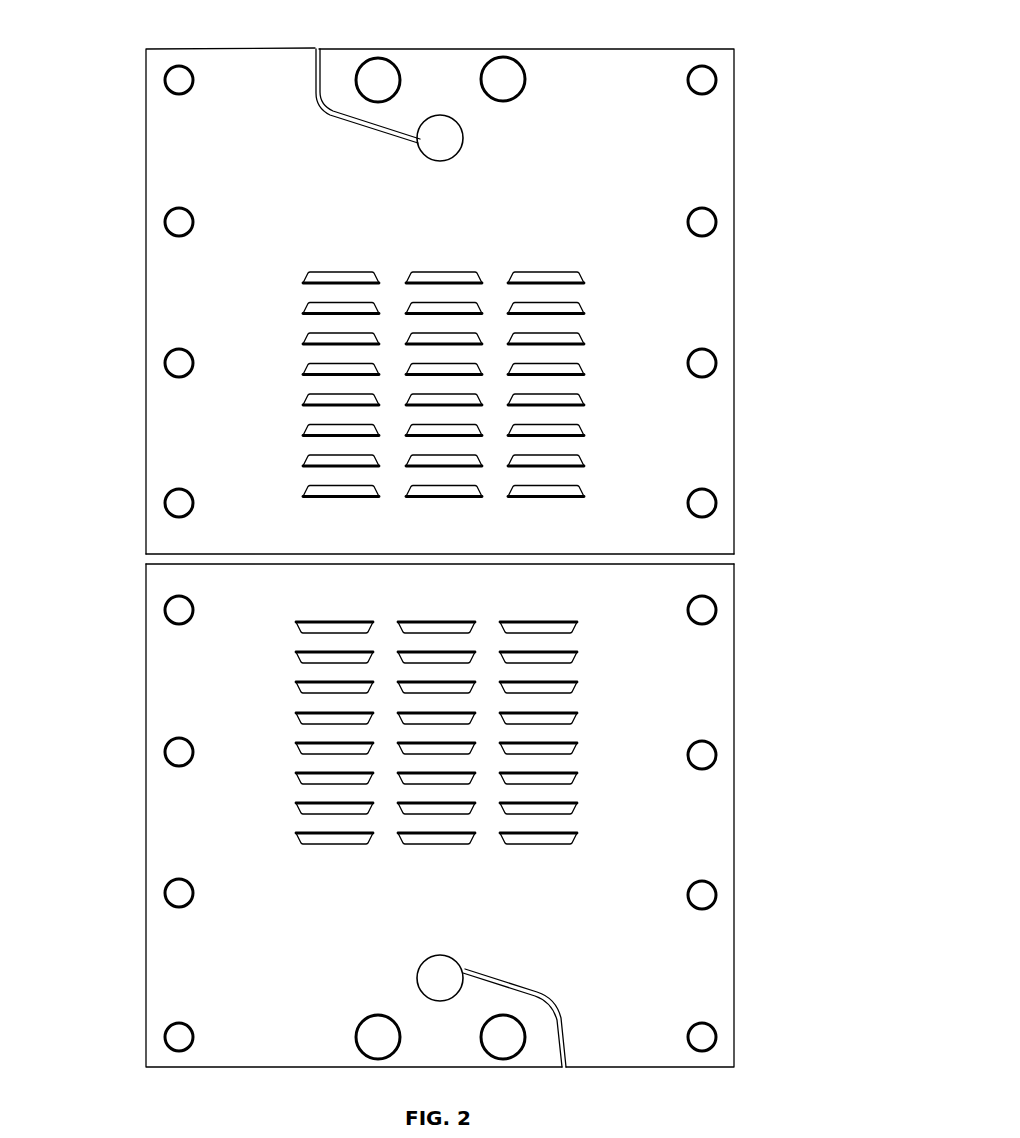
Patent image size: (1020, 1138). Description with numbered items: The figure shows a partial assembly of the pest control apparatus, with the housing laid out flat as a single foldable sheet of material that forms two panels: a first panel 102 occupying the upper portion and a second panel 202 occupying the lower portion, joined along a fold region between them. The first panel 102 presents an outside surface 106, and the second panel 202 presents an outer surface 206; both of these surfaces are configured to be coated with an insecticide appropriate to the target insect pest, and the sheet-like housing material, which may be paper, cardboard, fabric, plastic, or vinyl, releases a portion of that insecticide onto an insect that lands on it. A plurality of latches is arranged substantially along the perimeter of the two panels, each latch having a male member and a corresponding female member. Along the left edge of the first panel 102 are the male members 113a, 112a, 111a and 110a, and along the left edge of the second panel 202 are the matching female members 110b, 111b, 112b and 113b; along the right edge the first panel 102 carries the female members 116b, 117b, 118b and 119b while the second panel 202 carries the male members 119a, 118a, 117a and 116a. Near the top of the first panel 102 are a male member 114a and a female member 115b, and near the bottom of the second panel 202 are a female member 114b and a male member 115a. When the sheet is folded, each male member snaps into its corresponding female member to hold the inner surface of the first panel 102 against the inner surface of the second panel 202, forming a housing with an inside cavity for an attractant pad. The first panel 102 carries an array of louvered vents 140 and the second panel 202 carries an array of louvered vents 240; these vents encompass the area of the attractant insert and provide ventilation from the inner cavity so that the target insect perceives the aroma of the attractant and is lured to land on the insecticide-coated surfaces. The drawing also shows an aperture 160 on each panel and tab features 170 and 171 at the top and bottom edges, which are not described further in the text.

The first panel 102 is at (116, 271).
The outside surface 106 is at (223, 116).
The second panel 202 is at (116, 929).
The outer surface 206 is at (283, 968).
The louvered vents 140 is at (451, 258).
The louvered vents 240 is at (460, 858).
The aperture 160 is at (446, 116).
The slot tab 170 is at (312, 64).
The slot tab 171 is at (552, 1043).
The male member 110a is at (173, 503).
The male member 111a is at (173, 363).
The male member 112a is at (173, 222).
The male member 113a is at (173, 80).
The female member 110b is at (173, 610).
The female member 111b is at (173, 752).
The female member 112b is at (173, 893).
The female member 113b is at (173, 1037).
The male member 114a is at (370, 75).
The female member 115b is at (512, 72).
The female member 114b is at (370, 1047).
The male member 115a is at (512, 1047).
The male member 116a is at (708, 1037).
The male member 117a is at (708, 895).
The male member 118a is at (708, 755).
The male member 119a is at (708, 610).
The female member 116b is at (708, 80).
The female member 117b is at (708, 222).
The female member 118b is at (708, 363).
The female member 119b is at (708, 503).